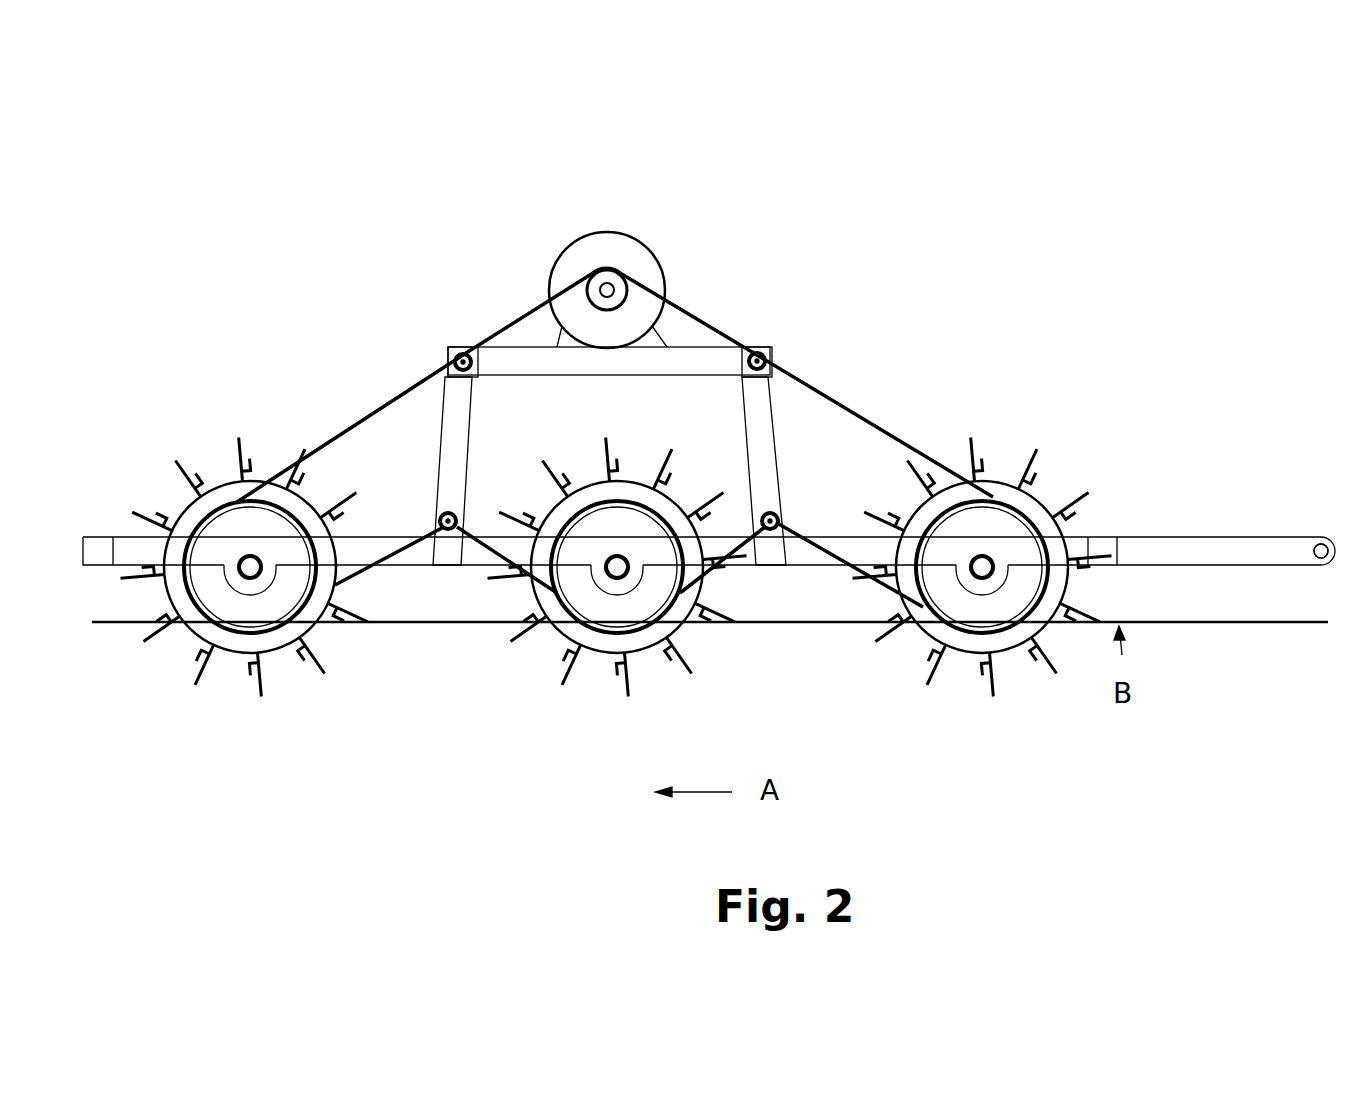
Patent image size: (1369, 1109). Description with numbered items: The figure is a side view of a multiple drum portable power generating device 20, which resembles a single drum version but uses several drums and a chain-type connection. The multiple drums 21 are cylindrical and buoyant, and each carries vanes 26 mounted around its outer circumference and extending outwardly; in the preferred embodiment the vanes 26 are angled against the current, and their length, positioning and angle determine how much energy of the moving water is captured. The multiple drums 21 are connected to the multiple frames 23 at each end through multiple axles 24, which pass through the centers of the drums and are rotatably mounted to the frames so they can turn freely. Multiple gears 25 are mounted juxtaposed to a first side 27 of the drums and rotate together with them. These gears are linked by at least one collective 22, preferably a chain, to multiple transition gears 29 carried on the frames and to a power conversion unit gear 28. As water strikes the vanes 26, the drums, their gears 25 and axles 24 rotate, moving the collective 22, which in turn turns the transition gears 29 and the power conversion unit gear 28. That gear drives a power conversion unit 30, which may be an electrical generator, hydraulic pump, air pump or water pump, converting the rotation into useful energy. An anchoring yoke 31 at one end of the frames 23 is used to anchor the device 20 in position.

The multiple drum portable power generating device 20 is at (636, 190).
The multiple drums 21 is at (273, 647).
The collective 22 is at (318, 447).
The multiple frames 23 is at (838, 533).
The multiple axles 24 is at (240, 580).
The multiple gears 25 is at (202, 520).
The vanes 26 is at (198, 672).
The first side 27 is at (1085, 585).
The power conversion unit gear 28 is at (620, 270).
The multiple transition gears 29 is at (455, 348).
The power conversion unit 30 is at (560, 257).
The anchoring yoke 31 is at (1317, 547).